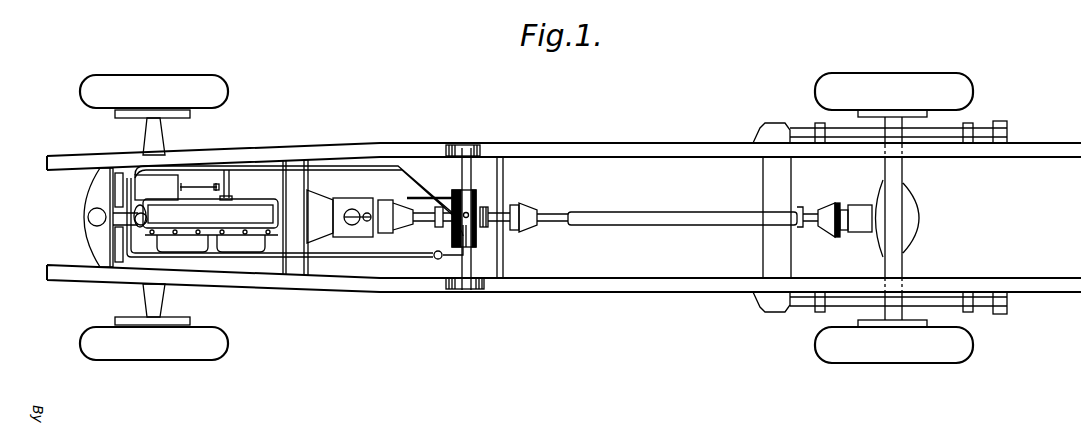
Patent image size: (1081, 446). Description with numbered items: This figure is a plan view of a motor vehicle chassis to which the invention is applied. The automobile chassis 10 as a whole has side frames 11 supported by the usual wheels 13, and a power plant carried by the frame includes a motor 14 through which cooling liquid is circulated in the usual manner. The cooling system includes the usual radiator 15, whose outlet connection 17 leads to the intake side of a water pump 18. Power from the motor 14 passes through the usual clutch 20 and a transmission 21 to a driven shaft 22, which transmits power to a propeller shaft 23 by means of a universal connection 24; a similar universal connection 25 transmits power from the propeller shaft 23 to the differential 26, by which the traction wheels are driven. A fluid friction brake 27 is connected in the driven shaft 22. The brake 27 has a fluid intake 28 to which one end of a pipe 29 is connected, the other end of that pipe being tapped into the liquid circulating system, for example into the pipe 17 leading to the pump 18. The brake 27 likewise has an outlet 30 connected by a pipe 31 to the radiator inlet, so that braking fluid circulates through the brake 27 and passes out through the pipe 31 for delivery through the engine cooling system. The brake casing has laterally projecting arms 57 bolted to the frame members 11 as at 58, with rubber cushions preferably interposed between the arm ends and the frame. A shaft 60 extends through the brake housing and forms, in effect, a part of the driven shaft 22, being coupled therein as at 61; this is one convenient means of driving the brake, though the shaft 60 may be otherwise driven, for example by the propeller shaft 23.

The automobile chassis 10 is at (611, 137).
The side frames 11 is at (692, 147).
The wheels 13 is at (206, 80).
The motor 14 is at (210, 225).
The radiator 15 is at (90, 198).
The outlet connection 17 is at (192, 165).
The water pump 18 is at (228, 176).
The clutch 20 is at (315, 210).
The transmission 21 is at (358, 200).
The driven shaft 22 is at (429, 224).
The propeller shaft 23 is at (628, 212).
The universal connection 24 is at (534, 210).
The universal connection 25 is at (833, 203).
The differential 26 is at (927, 210).
The fluid friction brake 27 is at (455, 204).
The fluid intake 28 is at (476, 249).
The pipe 29 is at (412, 167).
The outlet 30 is at (452, 228).
The pipe 31 is at (428, 258).
The laterally projecting arms 57 is at (468, 166).
The bolted connections 58 is at (466, 147).
The shaft 60 is at (478, 238).
The coupling 61 is at (484, 207).